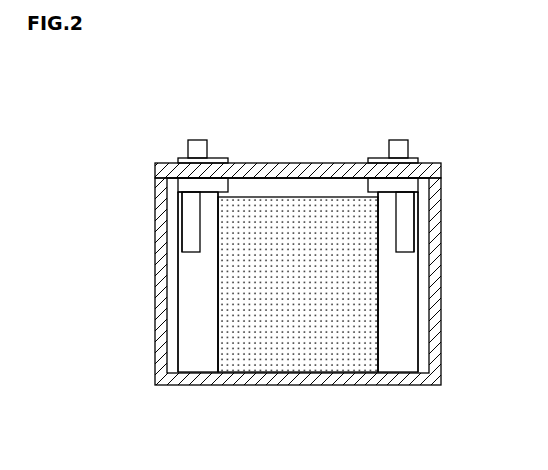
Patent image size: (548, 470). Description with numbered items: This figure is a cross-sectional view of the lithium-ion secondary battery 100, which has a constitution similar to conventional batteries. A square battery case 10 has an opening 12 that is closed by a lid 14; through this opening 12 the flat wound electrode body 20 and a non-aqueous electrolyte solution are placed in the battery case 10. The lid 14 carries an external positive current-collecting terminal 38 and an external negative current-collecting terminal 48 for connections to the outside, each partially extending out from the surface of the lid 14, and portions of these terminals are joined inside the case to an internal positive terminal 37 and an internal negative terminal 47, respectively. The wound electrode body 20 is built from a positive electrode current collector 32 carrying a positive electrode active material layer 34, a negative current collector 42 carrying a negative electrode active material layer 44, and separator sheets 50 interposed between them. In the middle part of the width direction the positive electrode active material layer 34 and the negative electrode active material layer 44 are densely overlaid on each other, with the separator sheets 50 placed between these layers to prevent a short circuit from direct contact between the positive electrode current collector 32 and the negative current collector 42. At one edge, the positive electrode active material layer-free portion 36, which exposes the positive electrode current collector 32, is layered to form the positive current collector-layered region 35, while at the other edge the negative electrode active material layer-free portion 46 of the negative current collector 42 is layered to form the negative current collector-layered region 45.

The lithium-ion secondary battery 100 is at (133, 81).
The battery case 10 is at (442, 305).
The opening 12 is at (284, 192).
The lid 14 is at (257, 163).
The wound electrode body 20 is at (313, 197).
The positive electrode current collector 32 is at (197, 362).
The positive electrode active material layer 34 is at (260, 345).
The positive current collector-layered region 35 is at (178, 257).
The positive electrode active material layer-free portion 36 is at (190, 343).
The internal positive terminal 37 is at (176, 192).
The external positive current-collecting terminal 38 is at (193, 140).
The negative current collector 42 is at (395, 360).
The negative electrode active material layer 44 is at (355, 345).
The negative current collector-layered region 45 is at (418, 262).
The negative electrode active material layer-free portion 46 is at (406, 343).
The internal negative terminal 47 is at (420, 192).
The external negative current-collecting terminal 48 is at (403, 140).
The separator sheet 50 is at (307, 360).